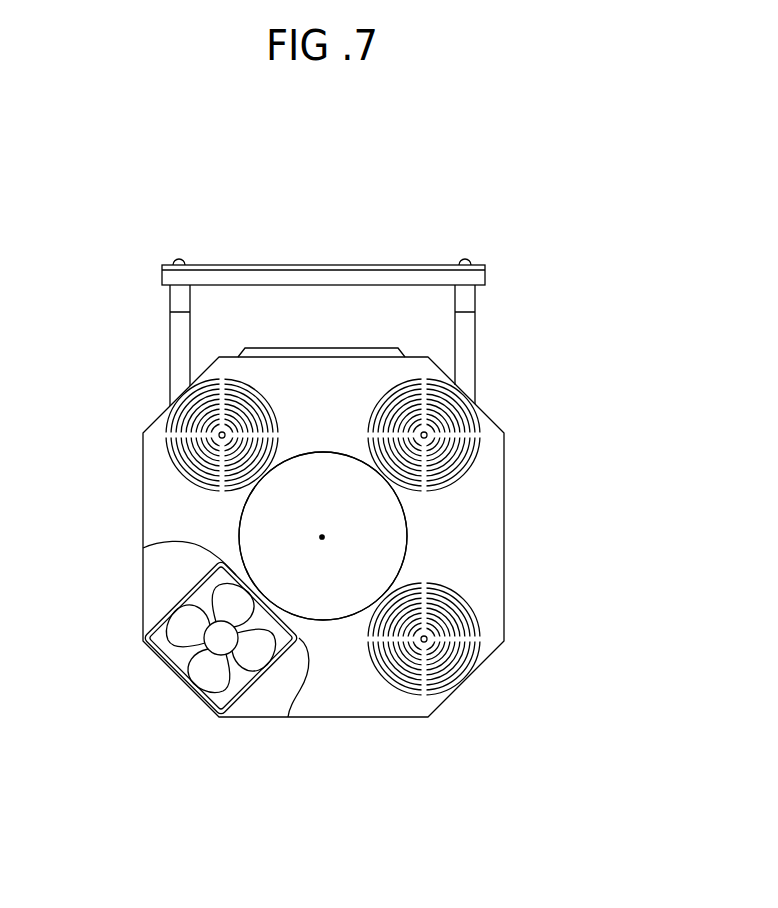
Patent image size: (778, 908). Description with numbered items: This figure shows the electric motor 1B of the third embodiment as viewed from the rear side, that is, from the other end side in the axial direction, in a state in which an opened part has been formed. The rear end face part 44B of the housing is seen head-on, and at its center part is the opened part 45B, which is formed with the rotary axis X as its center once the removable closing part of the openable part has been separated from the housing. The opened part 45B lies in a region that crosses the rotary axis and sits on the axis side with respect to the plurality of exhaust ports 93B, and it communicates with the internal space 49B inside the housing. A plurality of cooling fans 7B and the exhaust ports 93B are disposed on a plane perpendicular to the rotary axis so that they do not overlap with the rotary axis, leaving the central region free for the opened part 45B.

The projector 1B is at (462, 163).
The exhaust port 93B is at (472, 403).
The end face part 44B is at (492, 520).
The opened part 45B is at (405, 548).
The internal space 49B is at (388, 563).
The cooling fan 7B is at (175, 677).